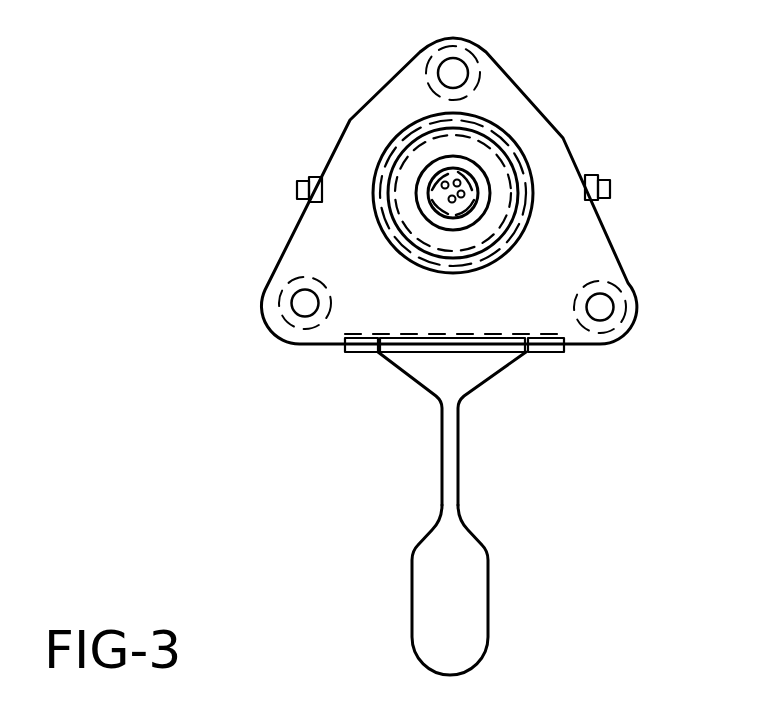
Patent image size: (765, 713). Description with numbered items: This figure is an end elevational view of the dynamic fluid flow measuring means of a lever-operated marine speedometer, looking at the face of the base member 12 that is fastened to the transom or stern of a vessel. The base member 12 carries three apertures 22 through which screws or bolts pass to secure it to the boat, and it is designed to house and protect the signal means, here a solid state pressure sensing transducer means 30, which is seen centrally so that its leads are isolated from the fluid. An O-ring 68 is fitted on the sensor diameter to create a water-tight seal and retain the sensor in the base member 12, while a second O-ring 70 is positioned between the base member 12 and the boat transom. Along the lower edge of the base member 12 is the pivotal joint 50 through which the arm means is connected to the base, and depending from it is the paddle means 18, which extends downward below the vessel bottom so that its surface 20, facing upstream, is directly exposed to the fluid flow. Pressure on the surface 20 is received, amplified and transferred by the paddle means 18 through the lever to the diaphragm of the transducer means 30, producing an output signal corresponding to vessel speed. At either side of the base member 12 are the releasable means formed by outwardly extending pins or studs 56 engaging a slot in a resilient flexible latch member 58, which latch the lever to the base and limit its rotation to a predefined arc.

The base member 12 is at (588, 254).
The paddle means 18 is at (441, 443).
The surface 20 is at (420, 584).
The apertures 22 is at (456, 72).
The solid state pressure sensing transducer means 30 is at (473, 165).
The pivotal joint 50 is at (562, 352).
The pins or studs 56 is at (297, 187).
The latch member 58 is at (316, 172).
The O-ring 68 is at (396, 240).
The second O-ring 70 is at (393, 140).